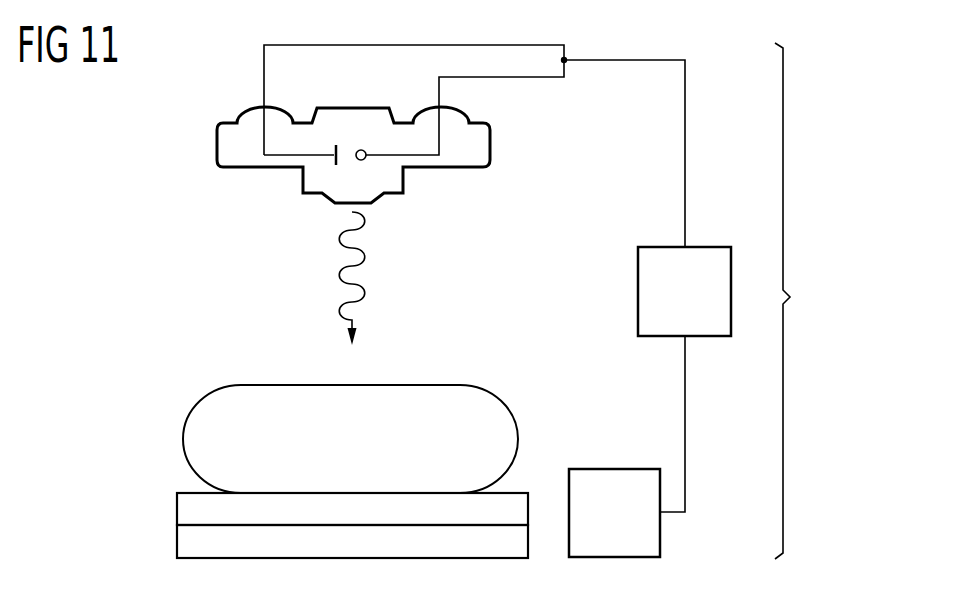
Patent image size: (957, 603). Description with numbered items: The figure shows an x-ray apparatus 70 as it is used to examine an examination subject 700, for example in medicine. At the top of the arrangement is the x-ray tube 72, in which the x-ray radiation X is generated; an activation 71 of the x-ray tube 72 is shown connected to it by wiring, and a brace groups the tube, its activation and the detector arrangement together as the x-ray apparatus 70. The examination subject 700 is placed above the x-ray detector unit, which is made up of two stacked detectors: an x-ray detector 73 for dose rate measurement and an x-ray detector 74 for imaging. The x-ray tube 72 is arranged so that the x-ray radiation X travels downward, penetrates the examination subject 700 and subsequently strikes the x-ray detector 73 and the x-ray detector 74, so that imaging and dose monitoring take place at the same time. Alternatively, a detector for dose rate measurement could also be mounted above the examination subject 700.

The x-ray apparatus 70 is at (797, 301).
The activation 71 is at (638, 290).
The x-ray tube 72 is at (492, 143).
The x-ray radiation X is at (365, 243).
The examination subject 700 is at (262, 385).
The x-ray detector for dose rate measurement 73 is at (177, 512).
The x-ray detector for imaging 74 is at (177, 543).